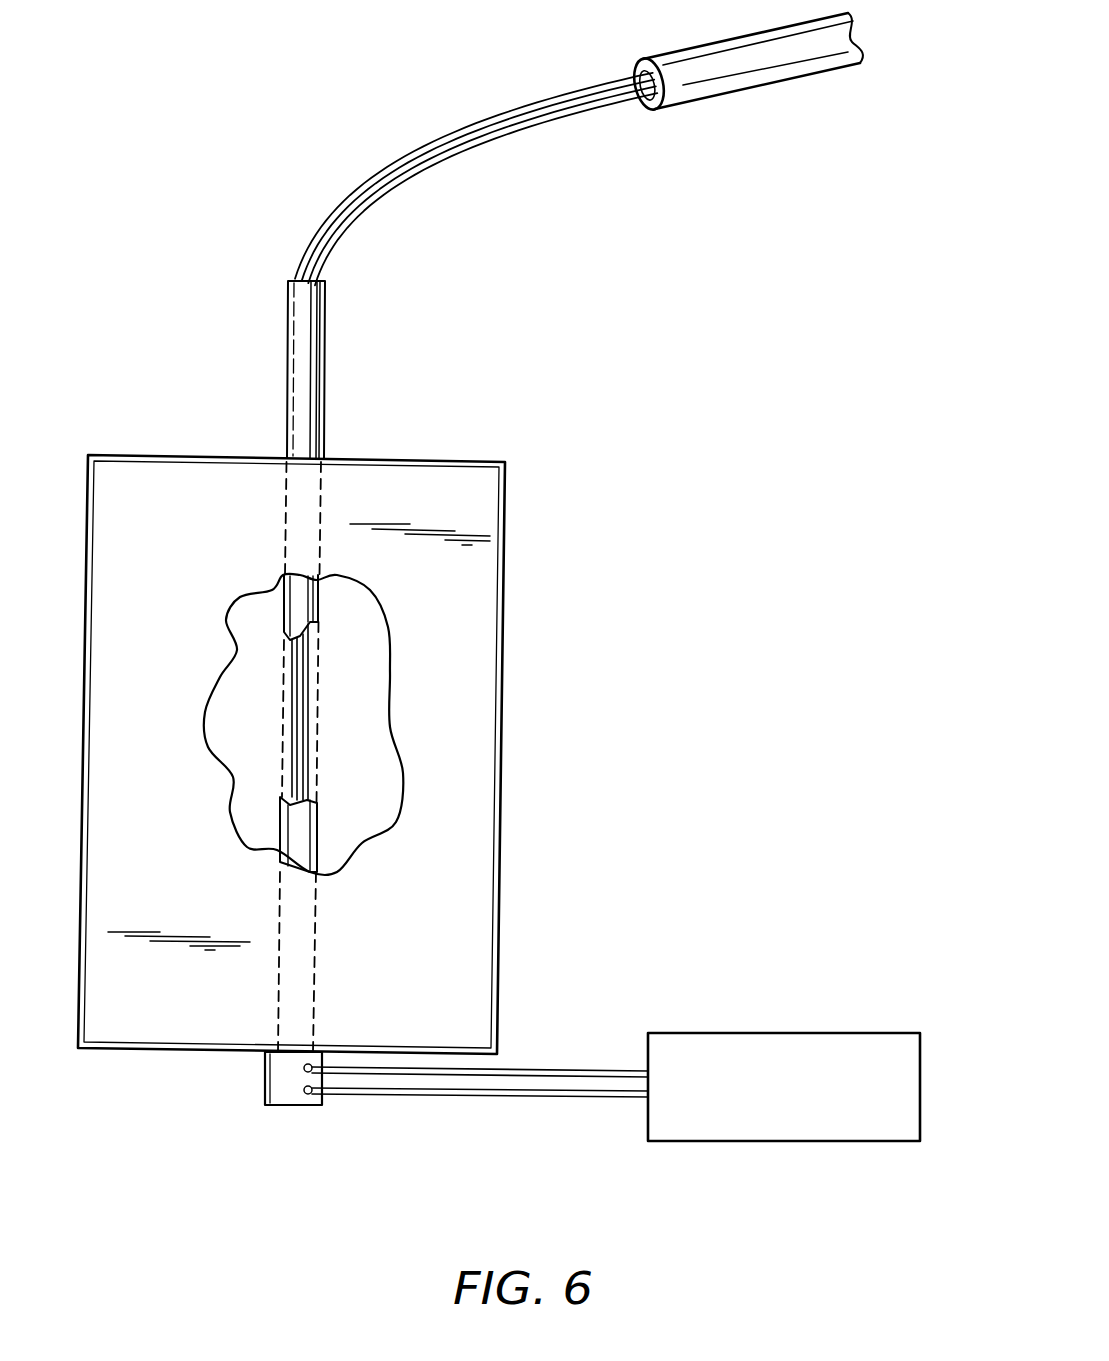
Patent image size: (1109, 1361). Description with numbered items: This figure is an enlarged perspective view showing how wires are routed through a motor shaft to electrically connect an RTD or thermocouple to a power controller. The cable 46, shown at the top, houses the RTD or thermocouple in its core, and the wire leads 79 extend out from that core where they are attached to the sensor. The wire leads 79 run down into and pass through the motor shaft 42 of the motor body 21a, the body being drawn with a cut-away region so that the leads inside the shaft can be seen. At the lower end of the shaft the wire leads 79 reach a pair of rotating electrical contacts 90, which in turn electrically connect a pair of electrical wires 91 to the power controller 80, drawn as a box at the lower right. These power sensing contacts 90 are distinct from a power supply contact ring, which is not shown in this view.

The cable 46 is at (735, 58).
The wire leads 79 is at (462, 153).
The motor shaft 42 is at (300, 337).
The motor body 21a is at (462, 747).
The power controller 80 is at (717, 1023).
The electrical wires 91 is at (582, 1093).
The rotating electrical contacts 90 is at (280, 1087).